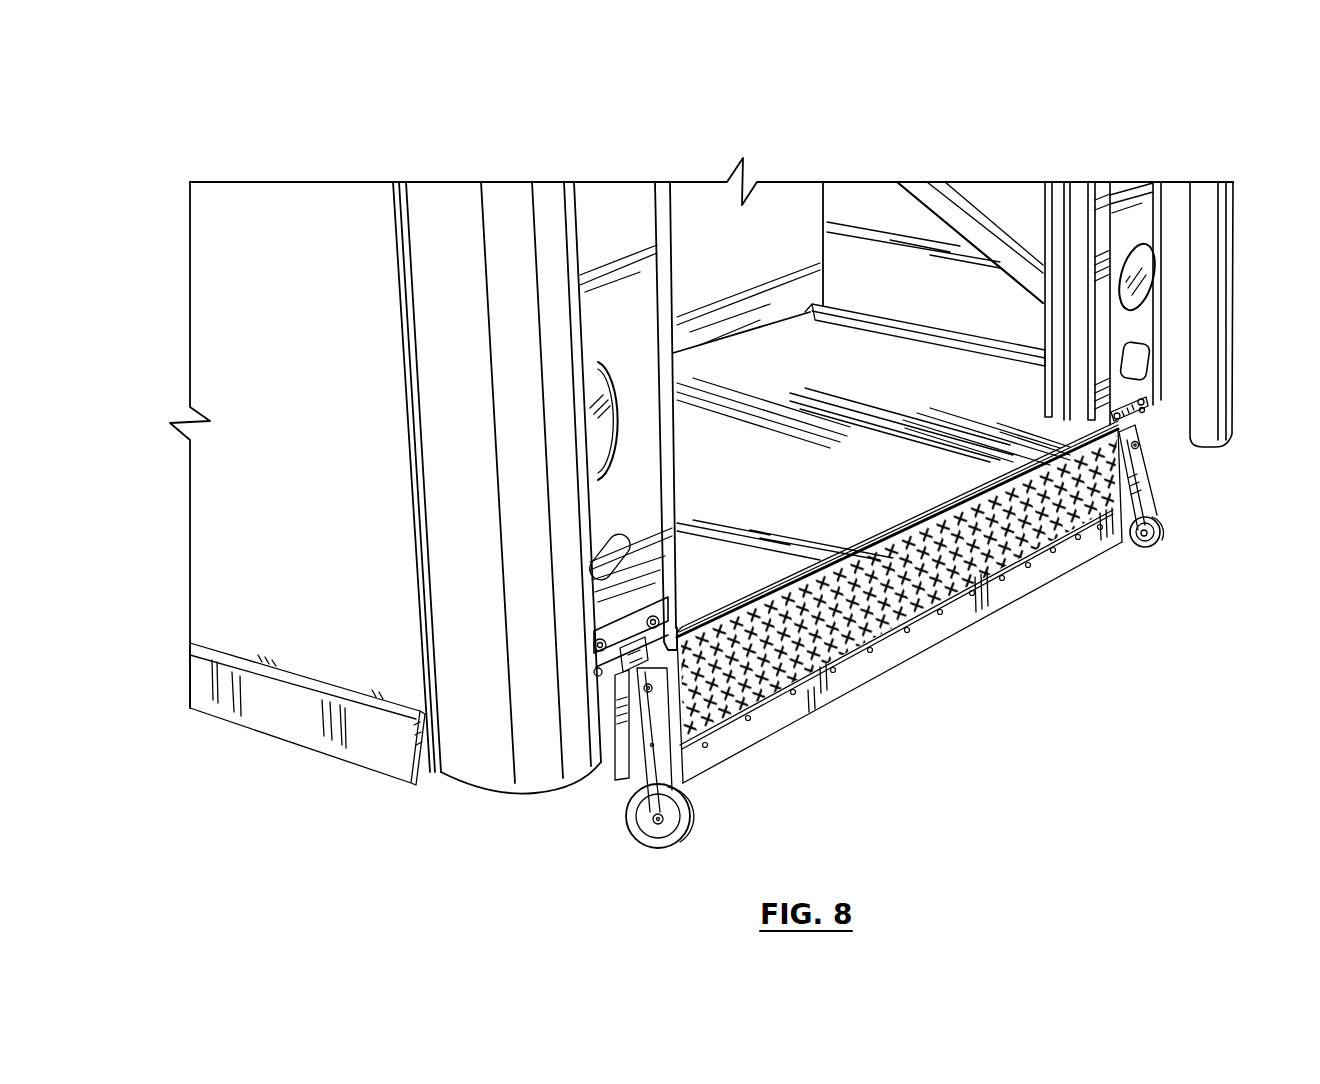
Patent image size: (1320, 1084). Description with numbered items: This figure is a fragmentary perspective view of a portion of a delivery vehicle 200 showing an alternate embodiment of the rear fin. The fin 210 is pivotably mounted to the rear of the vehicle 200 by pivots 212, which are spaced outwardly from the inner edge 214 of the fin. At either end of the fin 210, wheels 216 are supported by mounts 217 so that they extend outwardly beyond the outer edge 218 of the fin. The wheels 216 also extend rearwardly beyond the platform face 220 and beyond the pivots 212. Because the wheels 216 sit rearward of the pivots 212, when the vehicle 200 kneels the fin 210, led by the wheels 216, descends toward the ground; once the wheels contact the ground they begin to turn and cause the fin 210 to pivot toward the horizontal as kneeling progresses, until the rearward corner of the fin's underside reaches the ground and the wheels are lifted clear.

The vehicle 200 is at (318, 165).
The fin 210 is at (940, 627).
The pivots 212 is at (605, 725).
The inner edge 214 is at (837, 560).
The wheels 216 is at (693, 835).
The mounts 217 is at (637, 797).
The outer edge 218 is at (845, 695).
The platform face 220 is at (741, 757).